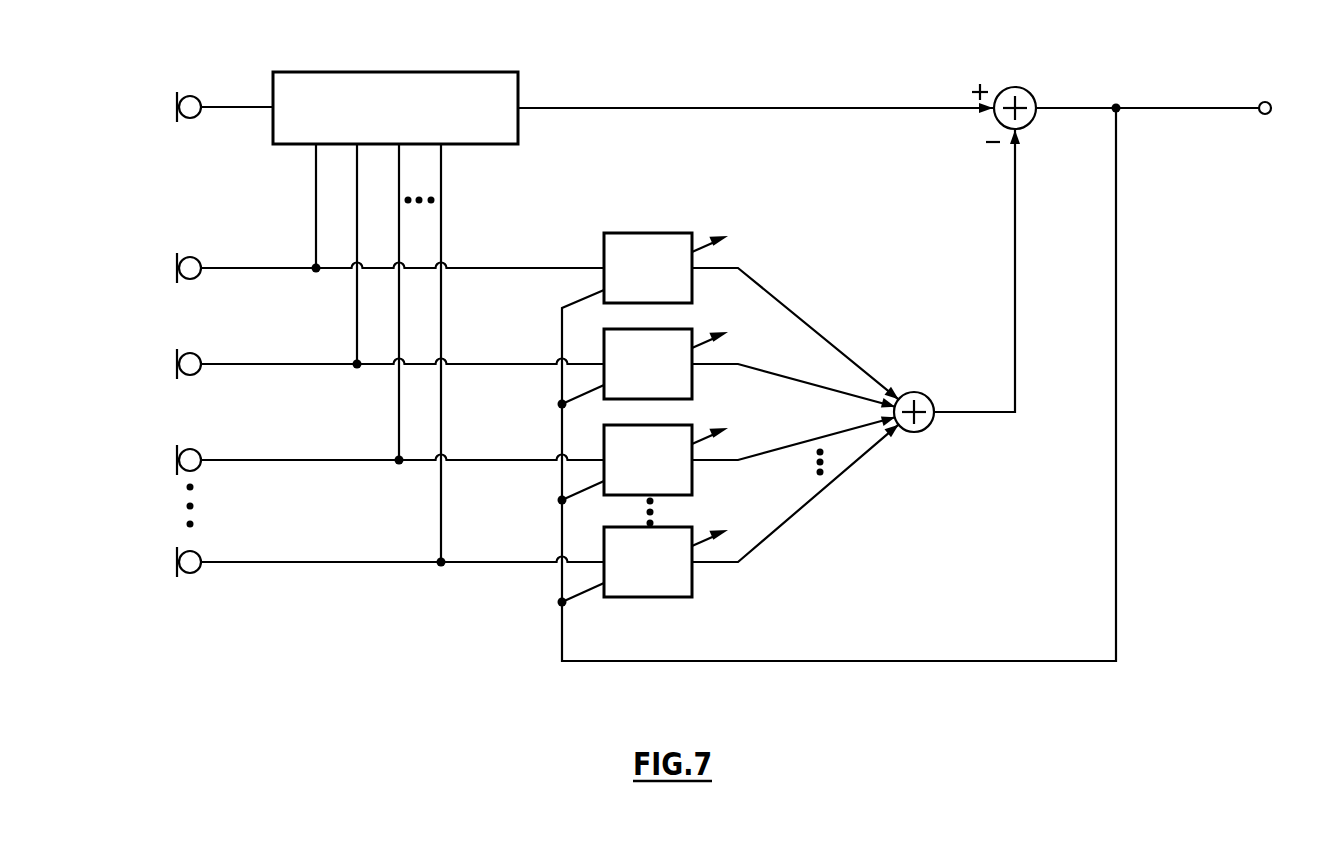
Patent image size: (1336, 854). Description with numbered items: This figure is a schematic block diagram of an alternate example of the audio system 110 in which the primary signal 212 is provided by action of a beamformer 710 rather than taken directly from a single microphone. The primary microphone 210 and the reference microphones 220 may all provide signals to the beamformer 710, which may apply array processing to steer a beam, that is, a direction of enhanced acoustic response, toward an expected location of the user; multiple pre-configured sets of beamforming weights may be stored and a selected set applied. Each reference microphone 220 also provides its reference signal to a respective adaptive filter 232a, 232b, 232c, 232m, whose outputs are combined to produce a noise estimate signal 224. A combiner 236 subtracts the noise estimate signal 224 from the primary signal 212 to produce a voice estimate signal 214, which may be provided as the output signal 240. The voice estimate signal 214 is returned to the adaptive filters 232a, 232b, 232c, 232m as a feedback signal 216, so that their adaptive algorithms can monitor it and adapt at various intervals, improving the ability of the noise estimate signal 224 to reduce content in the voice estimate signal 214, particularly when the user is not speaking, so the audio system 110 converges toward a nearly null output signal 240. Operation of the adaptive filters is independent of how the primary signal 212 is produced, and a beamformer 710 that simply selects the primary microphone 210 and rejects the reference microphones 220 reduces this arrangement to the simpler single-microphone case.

The audio system 110 is at (1196, 61).
The primary microphone 210 is at (176, 100).
The primary signal 212 is at (702, 108).
The voice estimate signal 214 is at (1097, 107).
The feedback signal 216 is at (1116, 342).
The reference microphones 220 is at (160, 262).
The noise estimate signal 224 is at (975, 412).
The adaptive filter 232a is at (678, 233).
The adaptive filter 232b is at (692, 380).
The adaptive filter 232c is at (692, 480).
The adaptive filter 232m is at (692, 578).
The combiner 236 is at (1030, 93).
The output signal 240 is at (1265, 114).
The beamformer 710 is at (518, 88).